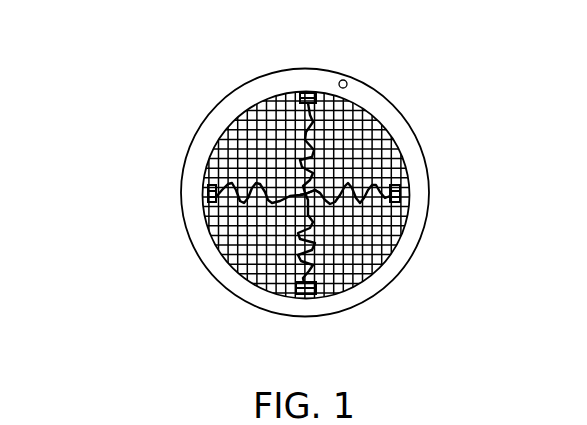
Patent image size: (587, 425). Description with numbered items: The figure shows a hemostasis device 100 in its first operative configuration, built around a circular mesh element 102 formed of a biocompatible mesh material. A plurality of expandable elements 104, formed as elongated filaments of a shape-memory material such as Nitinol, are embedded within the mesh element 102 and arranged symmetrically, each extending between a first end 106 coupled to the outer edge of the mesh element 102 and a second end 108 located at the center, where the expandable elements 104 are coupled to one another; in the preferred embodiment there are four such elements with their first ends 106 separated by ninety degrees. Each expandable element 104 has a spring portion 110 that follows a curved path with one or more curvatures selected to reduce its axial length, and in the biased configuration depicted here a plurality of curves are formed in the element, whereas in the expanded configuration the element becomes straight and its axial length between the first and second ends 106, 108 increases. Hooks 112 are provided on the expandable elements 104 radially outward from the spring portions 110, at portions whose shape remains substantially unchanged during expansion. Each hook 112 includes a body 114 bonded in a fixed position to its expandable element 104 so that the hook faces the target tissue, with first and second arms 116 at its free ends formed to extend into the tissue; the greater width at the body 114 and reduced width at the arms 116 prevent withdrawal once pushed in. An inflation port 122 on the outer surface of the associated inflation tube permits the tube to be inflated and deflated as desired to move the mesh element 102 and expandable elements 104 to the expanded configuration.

The hemostasis device 100 is at (124, 92).
The mesh element 102 is at (261, 126).
The expandable elements 104 is at (233, 181).
The first end 106 is at (306, 92).
The second end 108 is at (320, 208).
The spring portion 110 is at (308, 146).
The hooks 112 is at (316, 103).
The body 114 is at (306, 298).
The first and second arms 116 is at (292, 293).
The inflation port 122 is at (348, 84).